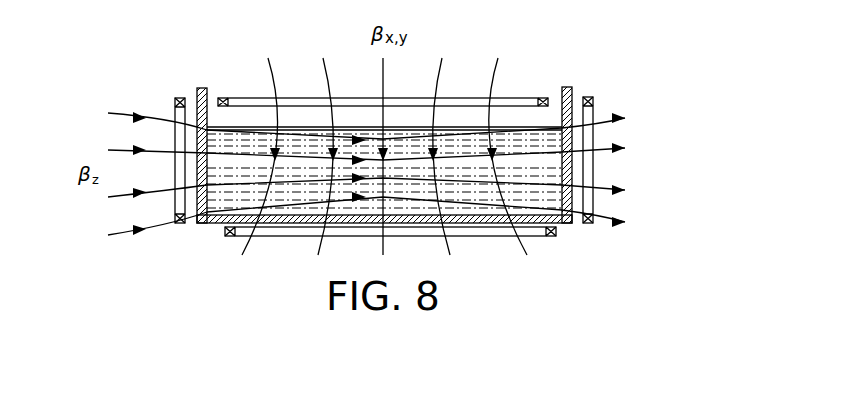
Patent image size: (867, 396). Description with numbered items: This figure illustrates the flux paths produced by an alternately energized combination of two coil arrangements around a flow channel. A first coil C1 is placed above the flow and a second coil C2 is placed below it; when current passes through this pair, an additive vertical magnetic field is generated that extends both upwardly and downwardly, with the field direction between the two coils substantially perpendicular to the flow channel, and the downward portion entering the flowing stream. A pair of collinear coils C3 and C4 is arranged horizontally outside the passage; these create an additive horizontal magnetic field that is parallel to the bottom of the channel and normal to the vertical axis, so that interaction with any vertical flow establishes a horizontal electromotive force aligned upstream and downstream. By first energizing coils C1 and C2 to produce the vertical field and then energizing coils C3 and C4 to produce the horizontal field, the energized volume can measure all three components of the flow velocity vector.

The first coil C1 is at (283, 97).
The second coil C2 is at (556, 231).
The coil C3 is at (174, 101).
The coil C4 is at (594, 105).